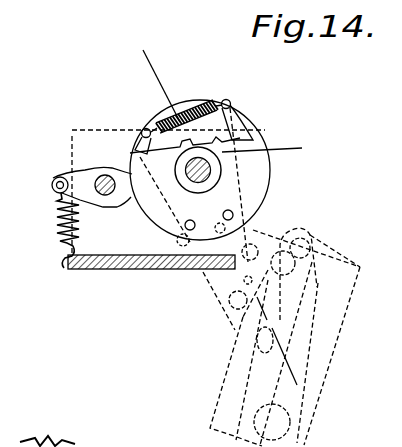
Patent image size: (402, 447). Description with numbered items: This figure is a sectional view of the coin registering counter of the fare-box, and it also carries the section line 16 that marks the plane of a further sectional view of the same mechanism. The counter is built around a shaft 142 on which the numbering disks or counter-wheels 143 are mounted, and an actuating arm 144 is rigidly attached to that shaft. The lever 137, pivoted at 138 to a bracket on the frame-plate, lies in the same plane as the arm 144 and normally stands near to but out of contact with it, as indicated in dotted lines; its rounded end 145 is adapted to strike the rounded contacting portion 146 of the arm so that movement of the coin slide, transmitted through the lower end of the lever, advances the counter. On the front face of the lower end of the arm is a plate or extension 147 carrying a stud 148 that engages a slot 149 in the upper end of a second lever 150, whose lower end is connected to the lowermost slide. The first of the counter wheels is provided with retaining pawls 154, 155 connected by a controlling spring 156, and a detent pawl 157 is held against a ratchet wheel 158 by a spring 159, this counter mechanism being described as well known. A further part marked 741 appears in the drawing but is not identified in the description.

The section line 16 is at (180, 38).
The lever 137 is at (325, 363).
The pivot 138 is at (290, 422).
The shaft 142 is at (222, 167).
The counter-wheels 143 is at (252, 122).
The actuating arm 144 is at (262, 194).
The rounded end 145 is at (320, 245).
The rounded contacting portion 146 is at (295, 233).
The plate or extension 147 is at (313, 308).
The stud 148 is at (230, 301).
The slot 149 is at (260, 335).
The lever 150 is at (225, 370).
The retaining pawl 154 is at (137, 138).
The retaining pawl 155 is at (232, 113).
The controlling spring 156 is at (173, 123).
The detent pawl 157 is at (80, 178).
The ratchet wheel 158 is at (240, 138).
The spring 159 is at (77, 218).
The bar 741 is at (151, 275).